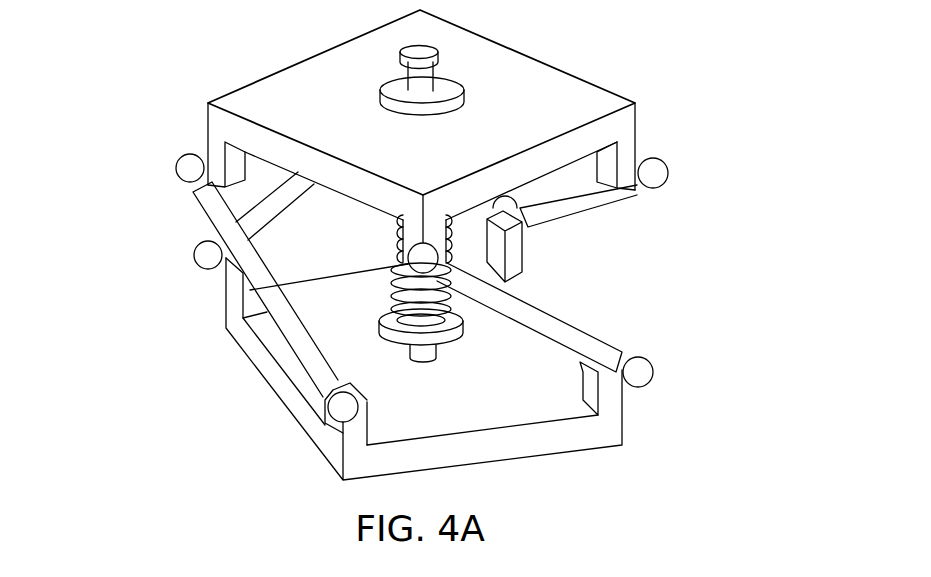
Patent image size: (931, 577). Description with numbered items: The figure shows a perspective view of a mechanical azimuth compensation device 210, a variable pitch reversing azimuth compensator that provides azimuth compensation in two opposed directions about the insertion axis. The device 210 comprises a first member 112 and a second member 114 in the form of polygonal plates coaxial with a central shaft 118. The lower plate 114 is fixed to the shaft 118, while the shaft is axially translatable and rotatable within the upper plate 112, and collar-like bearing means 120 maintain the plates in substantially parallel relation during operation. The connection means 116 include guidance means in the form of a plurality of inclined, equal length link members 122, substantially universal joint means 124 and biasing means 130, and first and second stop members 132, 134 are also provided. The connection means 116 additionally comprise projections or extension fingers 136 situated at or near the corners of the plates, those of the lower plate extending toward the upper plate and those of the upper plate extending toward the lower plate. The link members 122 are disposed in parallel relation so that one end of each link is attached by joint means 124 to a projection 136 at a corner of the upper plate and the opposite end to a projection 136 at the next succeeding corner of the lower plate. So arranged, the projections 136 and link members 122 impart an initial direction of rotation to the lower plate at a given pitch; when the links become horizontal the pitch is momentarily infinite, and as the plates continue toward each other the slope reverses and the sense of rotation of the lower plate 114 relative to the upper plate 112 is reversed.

The first member 112 is at (522, 70).
The second member 114 is at (503, 410).
The connection means 116 is at (165, 213).
The central shaft 118 is at (417, 88).
The bearing means 120 is at (440, 113).
The link members 122 is at (295, 187).
The universal joint means 124 is at (188, 170).
The biasing means 130 is at (392, 303).
The first stop member 132 is at (445, 342).
The second stop member 134 is at (440, 60).
The projections 136 is at (212, 152).
The azimuth compensation device 210 is at (727, 290).